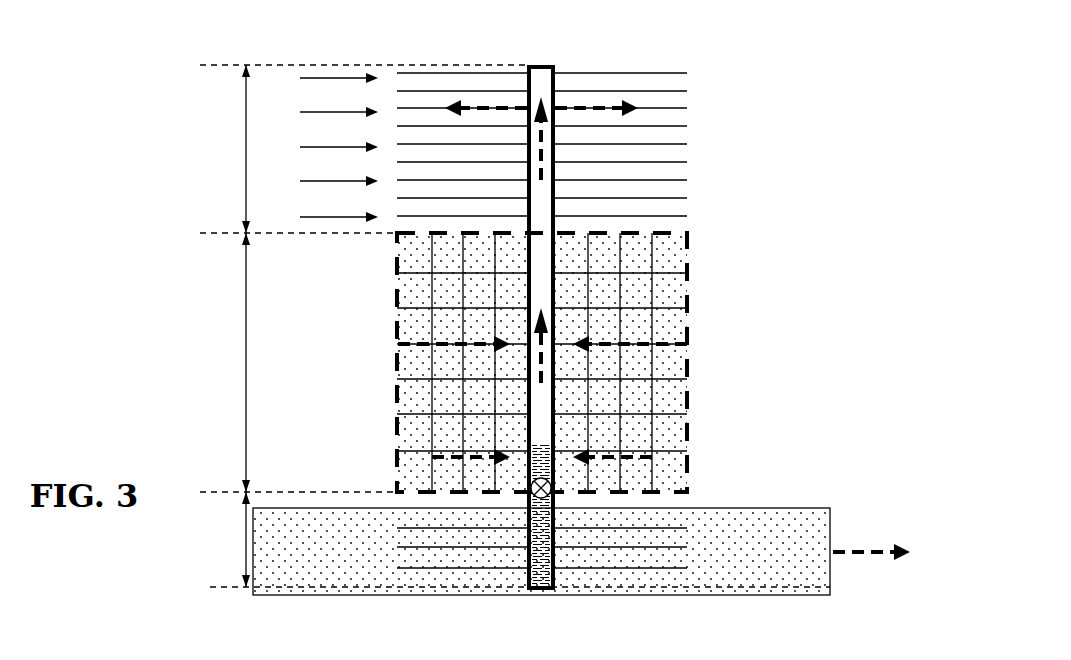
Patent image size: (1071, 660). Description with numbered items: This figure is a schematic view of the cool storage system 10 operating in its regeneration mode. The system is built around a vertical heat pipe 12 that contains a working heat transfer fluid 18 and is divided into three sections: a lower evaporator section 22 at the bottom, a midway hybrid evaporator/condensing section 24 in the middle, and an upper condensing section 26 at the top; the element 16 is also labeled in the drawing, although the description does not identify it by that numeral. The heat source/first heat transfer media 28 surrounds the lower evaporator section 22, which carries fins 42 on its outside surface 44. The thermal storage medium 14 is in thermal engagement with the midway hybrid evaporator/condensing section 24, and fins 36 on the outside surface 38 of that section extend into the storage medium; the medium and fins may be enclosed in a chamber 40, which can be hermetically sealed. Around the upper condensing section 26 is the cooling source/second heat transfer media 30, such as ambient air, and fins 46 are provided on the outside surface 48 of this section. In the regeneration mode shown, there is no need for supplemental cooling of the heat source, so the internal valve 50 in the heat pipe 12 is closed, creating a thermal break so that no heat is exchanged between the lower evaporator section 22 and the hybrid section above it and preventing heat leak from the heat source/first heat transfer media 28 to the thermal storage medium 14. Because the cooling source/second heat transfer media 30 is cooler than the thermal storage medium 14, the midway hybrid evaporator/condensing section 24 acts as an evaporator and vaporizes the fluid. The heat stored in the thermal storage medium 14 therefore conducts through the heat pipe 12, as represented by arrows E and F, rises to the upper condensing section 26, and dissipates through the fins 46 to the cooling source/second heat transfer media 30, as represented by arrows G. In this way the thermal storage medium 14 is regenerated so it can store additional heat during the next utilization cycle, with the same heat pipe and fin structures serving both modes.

The cool storage system 10 is at (742, 52).
The heat pipe 12 is at (558, 288).
The thermal storage medium 14 is at (668, 362).
The tubing string 16 is at (555, 83).
The heat transfer fluid 18 is at (540, 565).
The lower evaporator section 22 is at (555, 578).
The midway hybrid evaporator/condensing section 24 is at (527, 398).
The upper condensing section 26 is at (555, 135).
The heat source/first heat transfer media 28 is at (327, 558).
The cooling source/second heat transfer media 30 is at (440, 97).
The fins 36 is at (663, 272).
The outside surface 38 is at (557, 402).
The chamber 40 is at (687, 437).
The fins 42 is at (660, 568).
The outside surface 44 is at (555, 537).
The fins 46 is at (430, 145).
The outside surface 48 is at (555, 100).
The internal valve 50 is at (555, 497).
The arrows G is at (485, 100).
The arrows F is at (555, 155).
The arrows E is at (495, 338).